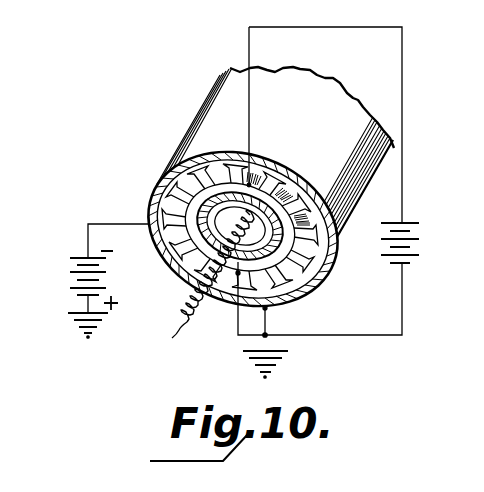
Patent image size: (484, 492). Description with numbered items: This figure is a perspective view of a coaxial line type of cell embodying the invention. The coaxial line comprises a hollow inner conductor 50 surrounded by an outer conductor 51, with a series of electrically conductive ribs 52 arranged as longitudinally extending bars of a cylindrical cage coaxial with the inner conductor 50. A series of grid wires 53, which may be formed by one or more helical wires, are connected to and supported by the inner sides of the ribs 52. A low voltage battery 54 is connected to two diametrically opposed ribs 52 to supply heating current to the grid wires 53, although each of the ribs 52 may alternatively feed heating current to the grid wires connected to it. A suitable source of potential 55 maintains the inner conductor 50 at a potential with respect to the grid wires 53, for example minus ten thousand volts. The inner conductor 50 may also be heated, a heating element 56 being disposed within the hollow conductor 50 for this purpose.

The hollow inner conductor 50 is at (212, 238).
The outer conductor 51 is at (324, 287).
The electrically conductive ribs 52 is at (294, 257).
The grid wires 53 is at (270, 176).
The low voltage battery 54 is at (410, 224).
The source of potential 55 is at (69, 277).
The heating element 56 is at (190, 297).